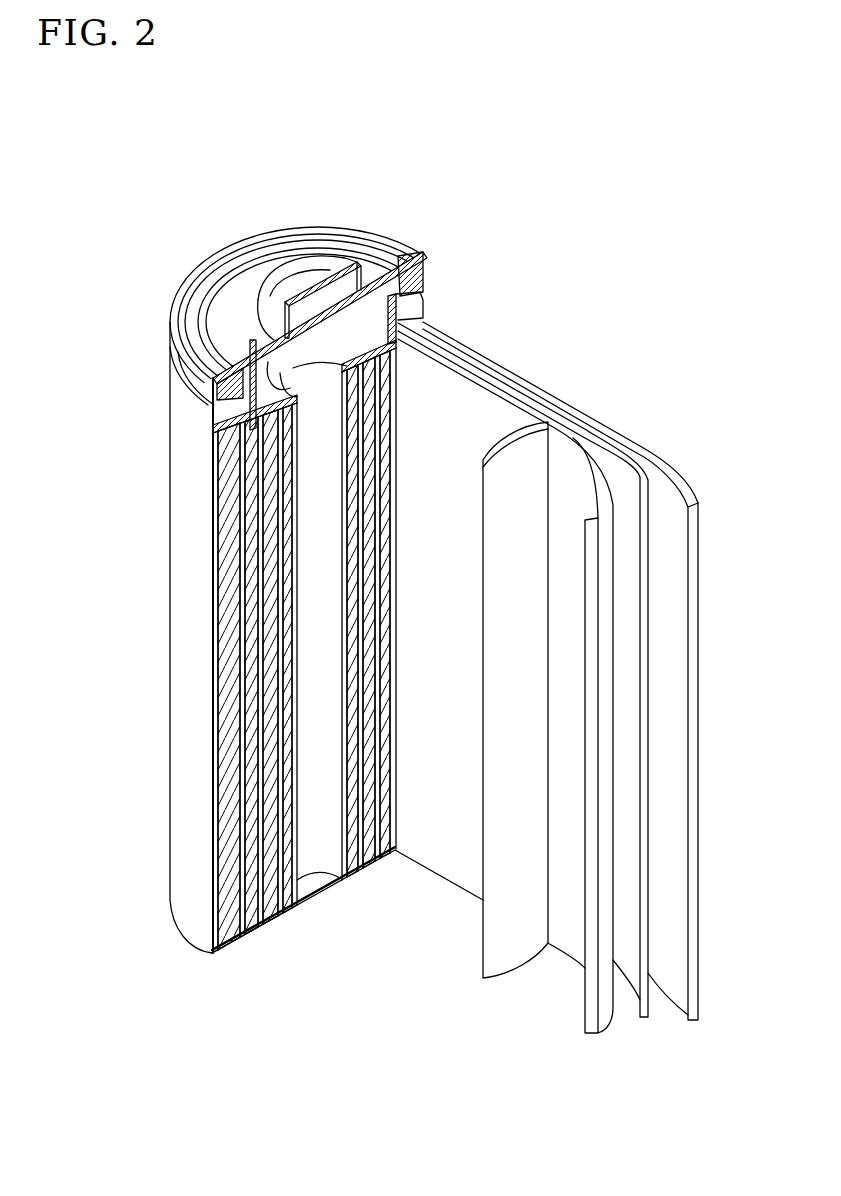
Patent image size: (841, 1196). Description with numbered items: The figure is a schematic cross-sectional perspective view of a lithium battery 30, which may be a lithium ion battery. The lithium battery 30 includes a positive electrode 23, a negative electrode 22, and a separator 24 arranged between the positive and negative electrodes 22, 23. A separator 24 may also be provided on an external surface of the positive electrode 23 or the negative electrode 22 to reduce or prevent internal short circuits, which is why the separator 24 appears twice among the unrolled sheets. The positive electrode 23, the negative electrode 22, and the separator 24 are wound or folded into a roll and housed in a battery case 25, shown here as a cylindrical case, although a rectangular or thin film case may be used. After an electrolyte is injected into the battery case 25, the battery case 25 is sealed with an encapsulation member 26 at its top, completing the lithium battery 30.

The negative electrode 22 is at (683, 483).
The positive electrode 23 is at (575, 440).
The separator 24 is at (512, 398).
The battery case 25 is at (182, 638).
The encapsulation member 26 is at (293, 268).
The lithium battery 30 is at (402, 177).